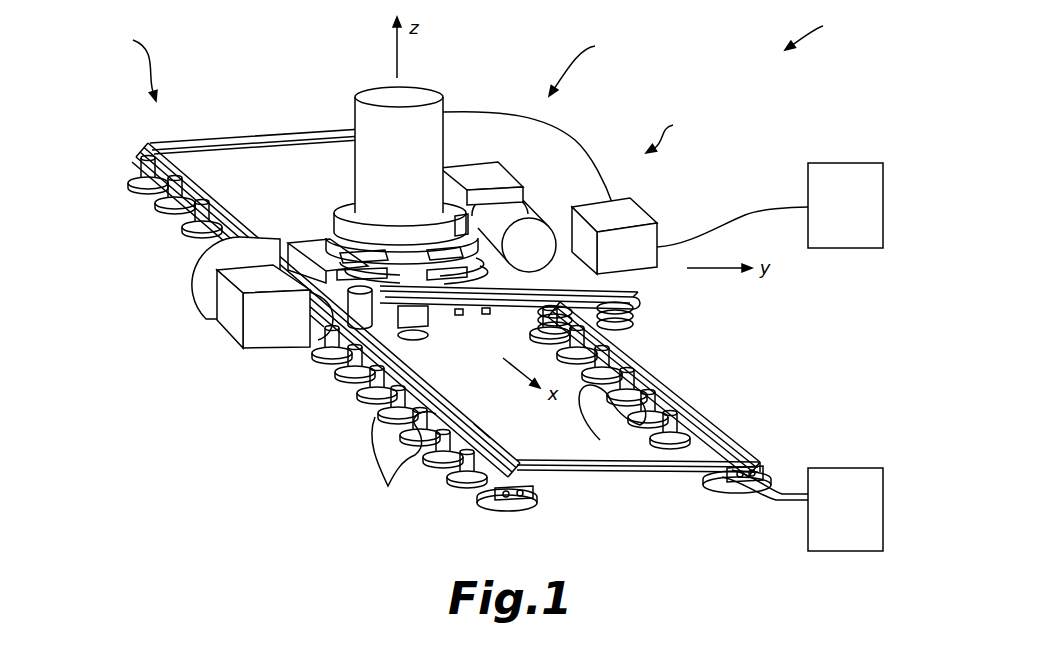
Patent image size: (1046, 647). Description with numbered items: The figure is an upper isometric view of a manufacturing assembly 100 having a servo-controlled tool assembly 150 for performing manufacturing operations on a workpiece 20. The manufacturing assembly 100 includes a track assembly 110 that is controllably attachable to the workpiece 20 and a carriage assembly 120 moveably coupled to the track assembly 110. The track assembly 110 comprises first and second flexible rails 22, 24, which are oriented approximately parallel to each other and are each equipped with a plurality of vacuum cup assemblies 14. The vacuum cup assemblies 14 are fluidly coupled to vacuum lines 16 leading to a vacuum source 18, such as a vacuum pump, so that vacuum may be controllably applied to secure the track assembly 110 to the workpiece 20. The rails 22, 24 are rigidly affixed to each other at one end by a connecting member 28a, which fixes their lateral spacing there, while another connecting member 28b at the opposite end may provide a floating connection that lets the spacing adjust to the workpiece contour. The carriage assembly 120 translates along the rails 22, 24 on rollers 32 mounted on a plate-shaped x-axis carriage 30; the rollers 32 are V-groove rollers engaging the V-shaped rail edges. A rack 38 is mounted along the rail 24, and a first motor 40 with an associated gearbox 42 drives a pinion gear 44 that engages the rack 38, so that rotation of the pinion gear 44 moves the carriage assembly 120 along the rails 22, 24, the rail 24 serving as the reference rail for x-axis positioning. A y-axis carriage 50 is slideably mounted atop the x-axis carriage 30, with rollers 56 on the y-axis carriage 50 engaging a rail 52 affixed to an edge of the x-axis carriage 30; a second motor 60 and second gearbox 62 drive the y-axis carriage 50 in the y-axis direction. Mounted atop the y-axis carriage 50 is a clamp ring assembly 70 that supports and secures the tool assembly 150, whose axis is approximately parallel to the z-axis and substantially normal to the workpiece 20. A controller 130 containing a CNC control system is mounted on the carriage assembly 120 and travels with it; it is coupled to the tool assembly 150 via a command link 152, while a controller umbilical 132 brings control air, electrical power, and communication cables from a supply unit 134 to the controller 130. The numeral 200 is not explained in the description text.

The vacuum cup assemblies 14 is at (390, 481).
The vacuum lines 16 is at (768, 507).
The vacuum source 18 is at (834, 522).
The workpiece 20 is at (449, 297).
The first flexible rail 22 is at (670, 378).
The second flexible rail 24 is at (457, 412).
The connecting member 28a is at (630, 467).
The connecting member 28b is at (270, 136).
The x-axis carriage 30 is at (633, 292).
The rollers 32 is at (400, 343).
The rack 38 is at (485, 432).
The first motor 40 is at (200, 282).
The gearbox 42 is at (232, 328).
The pinion gear 44 is at (368, 318).
The y-axis carriage 50 is at (297, 238).
The rail 52 is at (640, 305).
The rollers 56 is at (432, 315).
The second motor 60 is at (524, 214).
The second gearbox 62 is at (500, 170).
The clamp ring assembly 70 is at (336, 195).
The manufacturing assembly 100 is at (827, 34).
The track assembly 110 is at (123, 64).
The carriage assembly 120 is at (680, 132).
The controller 130 is at (628, 210).
The controller umbilical 132 is at (767, 207).
The supply unit 134 is at (829, 218).
The servo-controlled tool assembly 150 is at (441, 80).
The command link 152 is at (582, 140).
The tool assembly 200 is at (593, 63).